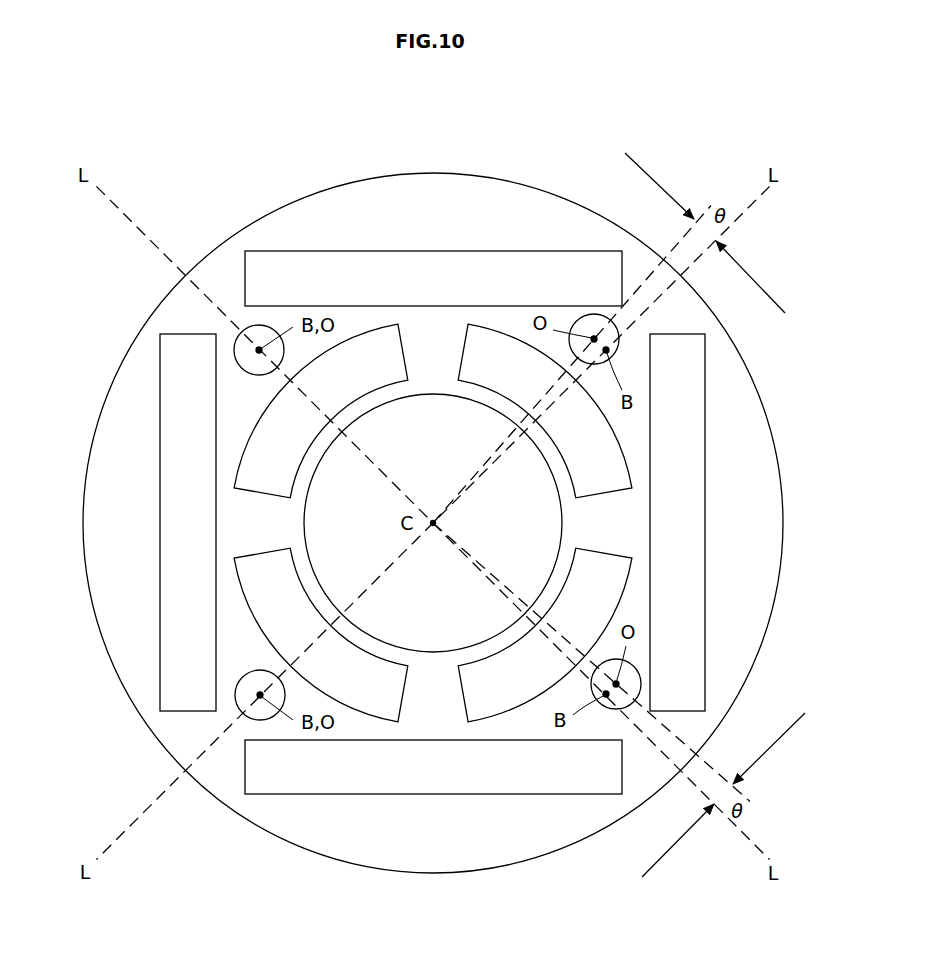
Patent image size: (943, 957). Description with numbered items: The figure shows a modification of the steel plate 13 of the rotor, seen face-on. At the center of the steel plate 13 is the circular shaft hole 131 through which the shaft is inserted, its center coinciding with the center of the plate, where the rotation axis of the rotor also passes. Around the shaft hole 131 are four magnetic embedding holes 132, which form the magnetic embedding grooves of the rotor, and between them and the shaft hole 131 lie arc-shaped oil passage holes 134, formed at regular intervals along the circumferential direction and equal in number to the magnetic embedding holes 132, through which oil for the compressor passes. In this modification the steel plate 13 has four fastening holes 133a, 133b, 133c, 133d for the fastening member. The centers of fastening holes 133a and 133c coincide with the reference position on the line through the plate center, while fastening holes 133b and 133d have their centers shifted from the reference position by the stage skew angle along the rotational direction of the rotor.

The steel plate 13 is at (181, 144).
The shaft hole 131 is at (428, 393).
The magnetic embedding hole 132 is at (529, 251).
The fastening hole 133a is at (239, 336).
The fastening hole 133b is at (245, 716).
The fastening hole 133c is at (603, 706).
The fastening hole 133d is at (618, 346).
The oil passage hole 134 is at (245, 444).